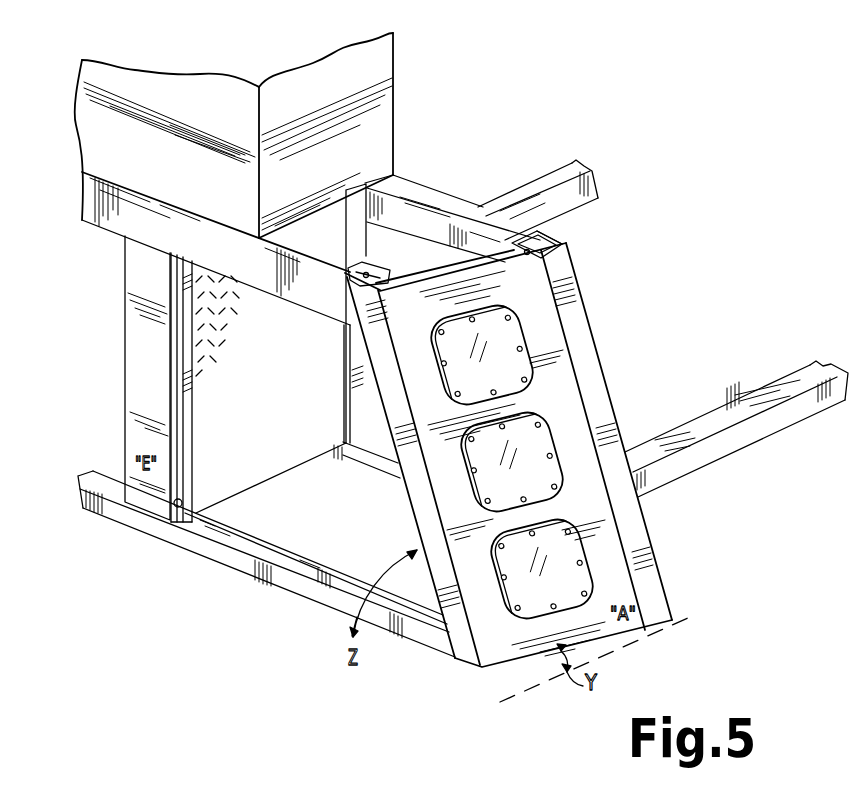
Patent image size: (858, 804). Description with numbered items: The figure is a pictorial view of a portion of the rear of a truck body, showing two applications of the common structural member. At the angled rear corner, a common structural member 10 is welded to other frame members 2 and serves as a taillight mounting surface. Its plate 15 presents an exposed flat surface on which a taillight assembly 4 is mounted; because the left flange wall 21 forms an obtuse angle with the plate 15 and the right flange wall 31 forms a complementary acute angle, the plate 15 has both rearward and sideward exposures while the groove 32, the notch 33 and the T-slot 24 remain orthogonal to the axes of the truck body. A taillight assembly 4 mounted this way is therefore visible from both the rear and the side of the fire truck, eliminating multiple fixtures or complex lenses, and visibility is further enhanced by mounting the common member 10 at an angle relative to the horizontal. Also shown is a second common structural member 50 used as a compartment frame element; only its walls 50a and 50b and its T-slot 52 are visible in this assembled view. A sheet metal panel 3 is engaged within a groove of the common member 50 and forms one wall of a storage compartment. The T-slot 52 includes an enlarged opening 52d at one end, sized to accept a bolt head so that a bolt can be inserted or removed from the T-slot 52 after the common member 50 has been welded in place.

The frame member 2 is at (608, 388).
The sheet metal panel 3 is at (233, 465).
The taillight assembly 4 is at (517, 432).
The common structural member 10 is at (604, 622).
The plate 15 is at (606, 536).
The left flange wall 21 is at (362, 277).
The T-slot 24 is at (352, 270).
The right flange wall 31 is at (552, 262).
The groove 32 is at (570, 225).
The notch 33 is at (517, 246).
The common structural member 50 is at (121, 384).
The wall 50a is at (150, 330).
The wall 50b is at (186, 430).
The T-slot 52 is at (178, 276).
The enlarged opening 52d is at (175, 505).